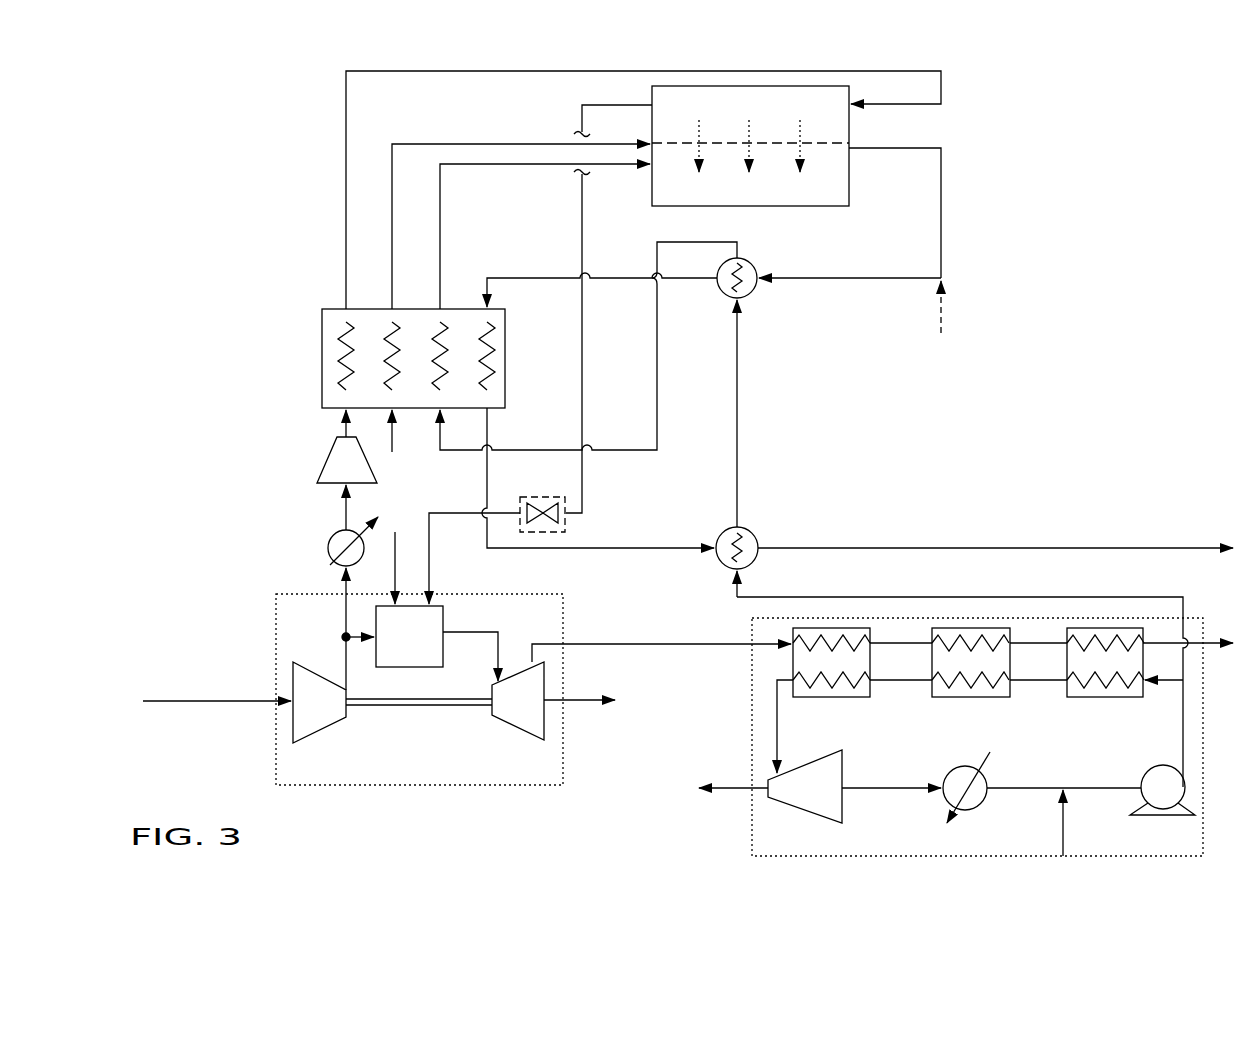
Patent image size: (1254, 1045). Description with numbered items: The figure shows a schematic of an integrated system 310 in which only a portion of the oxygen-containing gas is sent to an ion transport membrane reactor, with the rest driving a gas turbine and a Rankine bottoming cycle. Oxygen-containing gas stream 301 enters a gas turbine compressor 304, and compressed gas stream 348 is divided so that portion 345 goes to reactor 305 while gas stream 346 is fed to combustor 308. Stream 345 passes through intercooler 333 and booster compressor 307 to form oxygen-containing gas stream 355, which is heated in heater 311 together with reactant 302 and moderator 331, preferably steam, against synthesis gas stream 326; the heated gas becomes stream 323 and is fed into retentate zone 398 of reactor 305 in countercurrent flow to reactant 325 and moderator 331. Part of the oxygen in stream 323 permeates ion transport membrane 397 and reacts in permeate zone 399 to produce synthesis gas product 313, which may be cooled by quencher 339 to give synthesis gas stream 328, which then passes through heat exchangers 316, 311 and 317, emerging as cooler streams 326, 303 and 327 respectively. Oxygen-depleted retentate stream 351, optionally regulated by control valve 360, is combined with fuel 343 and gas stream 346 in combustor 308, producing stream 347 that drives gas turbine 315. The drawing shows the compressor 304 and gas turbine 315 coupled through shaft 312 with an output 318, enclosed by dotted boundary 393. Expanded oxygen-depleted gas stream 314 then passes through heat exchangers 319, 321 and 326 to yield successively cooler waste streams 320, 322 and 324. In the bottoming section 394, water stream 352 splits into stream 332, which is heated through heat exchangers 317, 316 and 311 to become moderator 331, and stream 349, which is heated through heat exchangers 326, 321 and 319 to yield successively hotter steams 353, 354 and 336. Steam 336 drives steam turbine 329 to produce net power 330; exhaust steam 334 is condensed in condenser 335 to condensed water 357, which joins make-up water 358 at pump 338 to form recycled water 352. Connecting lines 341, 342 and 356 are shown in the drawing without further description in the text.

The power generation system 310 is at (1087, 86).
The oxygen-containing gas stream 301 is at (213, 701).
The reactant 302 is at (392, 444).
The cooler gas stream 303 is at (621, 548).
The compressor 304 is at (332, 715).
The reactor 305 is at (632, 101).
The booster compressor 307 is at (363, 473).
The combustor 308 is at (425, 643).
The heater 311 is at (325, 374).
The shaft 312 is at (416, 699).
The synthesis gas product 313 is at (877, 148).
The expanded oxygen-depleted gas stream 314 is at (592, 644).
The gas turbine 315 is at (534, 707).
The heat exchanger 316 is at (752, 296).
The heat exchanger 317 is at (718, 532).
The output shaft 318 is at (580, 700).
The heat exchanger 319 is at (846, 669).
The waste stream 320 is at (878, 643).
The heat exchanger 321 is at (985, 669).
The waste stream 322 is at (1018, 643).
The oxygen-containing gas stream 323 is at (872, 70).
The waste stream 324 is at (1198, 643).
The reactant 325 is at (460, 143).
The synthesis gas stream / heat exchanger 326 is at (681, 270).
The cooler gas stream 327 is at (1033, 548).
The synthesis gas stream 328 is at (844, 278).
The steam turbine 329 is at (822, 796).
The net power 330 is at (734, 786).
The moderator 331 is at (440, 228).
The stream 332 is at (778, 597).
The intercooler 333 is at (332, 541).
The steam 334 is at (865, 790).
The condenser 335 is at (974, 807).
The steam 336 is at (779, 716).
The pump 338 is at (1160, 815).
The quencher 339 is at (947, 312).
The fluid stream 341 is at (740, 410).
The fluid stream 342 is at (657, 374).
The fuel 343 is at (390, 545).
The oxygen-containing gas stream 345 is at (344, 600).
The gas stream 346 is at (365, 642).
The oxygen-containing gas stream 347 is at (472, 632).
The compressed gas stream 348 is at (344, 657).
The water stream 349 is at (1166, 684).
The oxygen-depleted retentate gas stream 351 is at (580, 229).
The water stream 352 is at (1186, 696).
The steam 353 is at (1018, 680).
The steam 354 is at (879, 680).
The oxygen-containing gas stream 355 is at (341, 433).
The fluid stream 356 is at (436, 513).
The condensed water 357 is at (1005, 788).
The make-up water 358 is at (1064, 820).
The control valve 360 is at (544, 497).
The gas turbine section 393 is at (398, 786).
The bottoming cycle section 394 is at (839, 857).
The ion transport membrane 397 is at (768, 143).
The retentate zone 398 is at (712, 114).
The permeate zone 399 is at (704, 200).